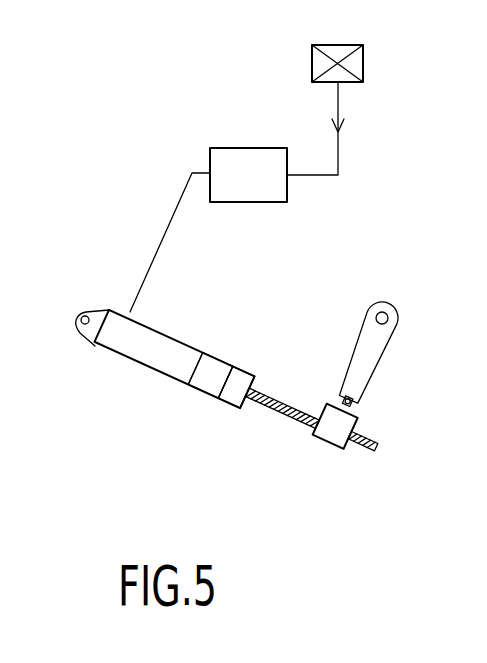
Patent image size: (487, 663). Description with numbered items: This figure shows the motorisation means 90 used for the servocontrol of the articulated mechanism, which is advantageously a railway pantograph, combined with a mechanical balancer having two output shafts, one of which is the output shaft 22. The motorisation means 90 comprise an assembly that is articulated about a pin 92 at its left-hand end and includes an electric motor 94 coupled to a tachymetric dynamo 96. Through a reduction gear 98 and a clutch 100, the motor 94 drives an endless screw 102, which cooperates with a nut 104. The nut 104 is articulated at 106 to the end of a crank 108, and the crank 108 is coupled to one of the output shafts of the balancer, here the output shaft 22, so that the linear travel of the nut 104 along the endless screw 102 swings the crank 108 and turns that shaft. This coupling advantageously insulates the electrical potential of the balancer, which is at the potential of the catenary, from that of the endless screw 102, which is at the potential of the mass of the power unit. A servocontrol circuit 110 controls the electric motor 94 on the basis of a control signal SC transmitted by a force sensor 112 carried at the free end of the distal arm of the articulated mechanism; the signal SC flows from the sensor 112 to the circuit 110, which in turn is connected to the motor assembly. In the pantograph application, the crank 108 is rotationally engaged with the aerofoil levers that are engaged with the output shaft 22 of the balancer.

The output shaft 22 is at (382, 302).
The motorisation means 90 is at (240, 381).
The pin 92 is at (85, 315).
The electric motor 94 is at (145, 366).
The tachymetric dynamo 96 is at (132, 352).
The reduction gear 98 is at (208, 388).
The clutch 100 is at (253, 376).
The endless screw 102 is at (273, 413).
The nut 104 is at (331, 443).
The articulation 106 is at (355, 405).
The crank 108 is at (370, 347).
The servocontrol circuit 110 is at (247, 148).
The force sensor 112 is at (363, 63).